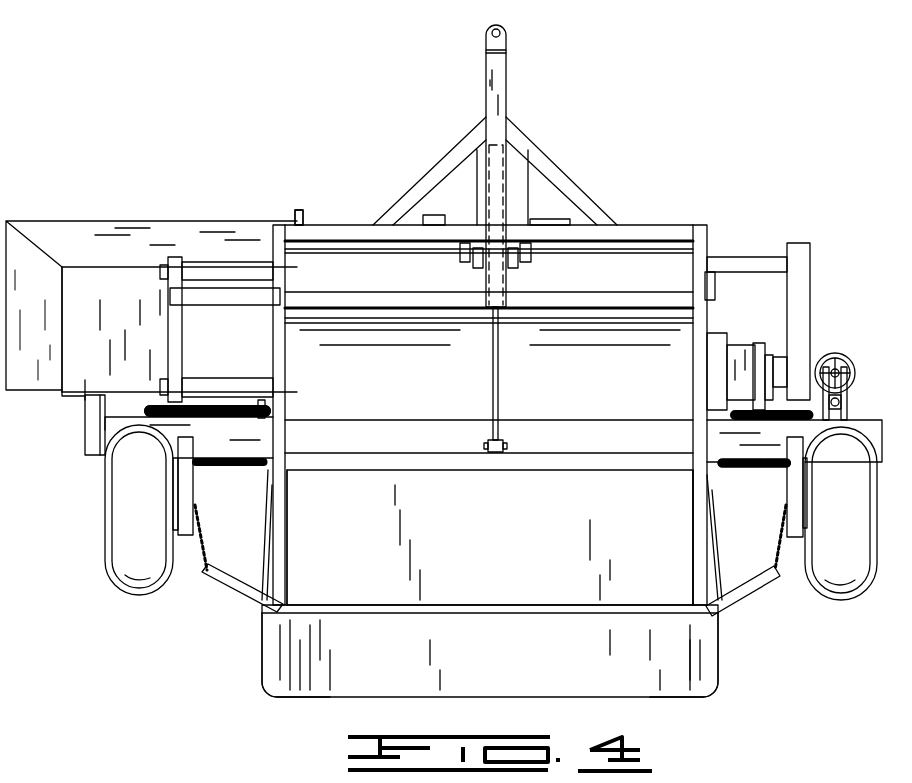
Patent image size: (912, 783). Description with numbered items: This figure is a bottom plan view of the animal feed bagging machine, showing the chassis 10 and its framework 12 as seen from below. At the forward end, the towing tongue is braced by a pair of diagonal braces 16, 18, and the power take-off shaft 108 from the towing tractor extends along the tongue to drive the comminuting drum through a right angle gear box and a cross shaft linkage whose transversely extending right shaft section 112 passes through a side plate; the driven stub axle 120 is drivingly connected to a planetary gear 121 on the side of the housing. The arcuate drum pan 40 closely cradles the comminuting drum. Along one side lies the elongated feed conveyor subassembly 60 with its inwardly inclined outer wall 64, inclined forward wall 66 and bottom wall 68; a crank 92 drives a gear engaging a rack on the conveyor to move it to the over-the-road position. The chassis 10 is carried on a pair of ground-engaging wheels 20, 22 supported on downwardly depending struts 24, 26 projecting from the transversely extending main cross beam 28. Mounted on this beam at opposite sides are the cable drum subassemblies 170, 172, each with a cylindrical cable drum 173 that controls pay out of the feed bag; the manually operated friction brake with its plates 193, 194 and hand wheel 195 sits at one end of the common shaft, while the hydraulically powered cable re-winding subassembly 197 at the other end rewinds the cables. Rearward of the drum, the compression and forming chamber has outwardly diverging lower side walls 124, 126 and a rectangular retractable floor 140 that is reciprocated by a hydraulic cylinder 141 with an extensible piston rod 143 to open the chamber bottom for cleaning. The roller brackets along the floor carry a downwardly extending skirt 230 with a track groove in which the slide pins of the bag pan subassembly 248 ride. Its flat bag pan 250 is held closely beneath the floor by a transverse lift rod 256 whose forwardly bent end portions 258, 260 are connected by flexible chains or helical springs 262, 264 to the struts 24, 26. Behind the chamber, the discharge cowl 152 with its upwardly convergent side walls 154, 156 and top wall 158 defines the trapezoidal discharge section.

The chassis 10 is at (490, 380).
The framework 12 is at (598, 303).
The diagonal brace 16 is at (522, 172).
The diagonal brace 18 is at (470, 160).
The ground-engaging wheel 20 is at (840, 580).
The ground-engaging wheel 22 is at (135, 575).
The strut 24 is at (790, 482).
The strut 26 is at (192, 485).
The main cross beam 28 is at (255, 446).
The drum pan 40 is at (412, 392).
The feed conveyor subassembly 60 is at (151, 287).
The outer wall 64 is at (42, 286).
The forward wall 66 is at (163, 230).
The bottom wall 68 is at (122, 336).
The crank 92 is at (298, 210).
The power take-off shaft 108 is at (497, 73).
The right shaft section 112 is at (748, 262).
The stub axle 120 is at (775, 350).
The planetary gear 121 is at (727, 375).
The lower side wall 124 is at (713, 563).
The lower side wall 126 is at (265, 556).
The retractable floor 140 is at (365, 458).
The hydraulic cylinder 141 is at (498, 258).
The piston rod 143 is at (500, 392).
The discharge cowl 152 is at (350, 665).
The side wall 154 is at (685, 680).
The side wall 156 is at (292, 664).
The top wall 158 is at (523, 661).
The cable drum subassembly 170 is at (735, 478).
The cable drum subassembly 172 is at (225, 405).
The cable drum 173 is at (145, 404).
The friction brake subassembly plate 193 is at (851, 394).
The friction brake subassembly plate 194 is at (797, 388).
The hand wheel 195 is at (838, 353).
The cable re-winding subassembly 197 is at (84, 435).
The skirt 230 is at (292, 472).
The bag pan subassembly 248 is at (548, 492).
The bag pan 250 is at (492, 541).
The lift rod 256 is at (362, 606).
The forwardly bent end portion 258 is at (738, 598).
The forwardly bent end portion 260 is at (250, 600).
The chain or spring 262 is at (200, 565).
The chain or spring 264 is at (783, 540).